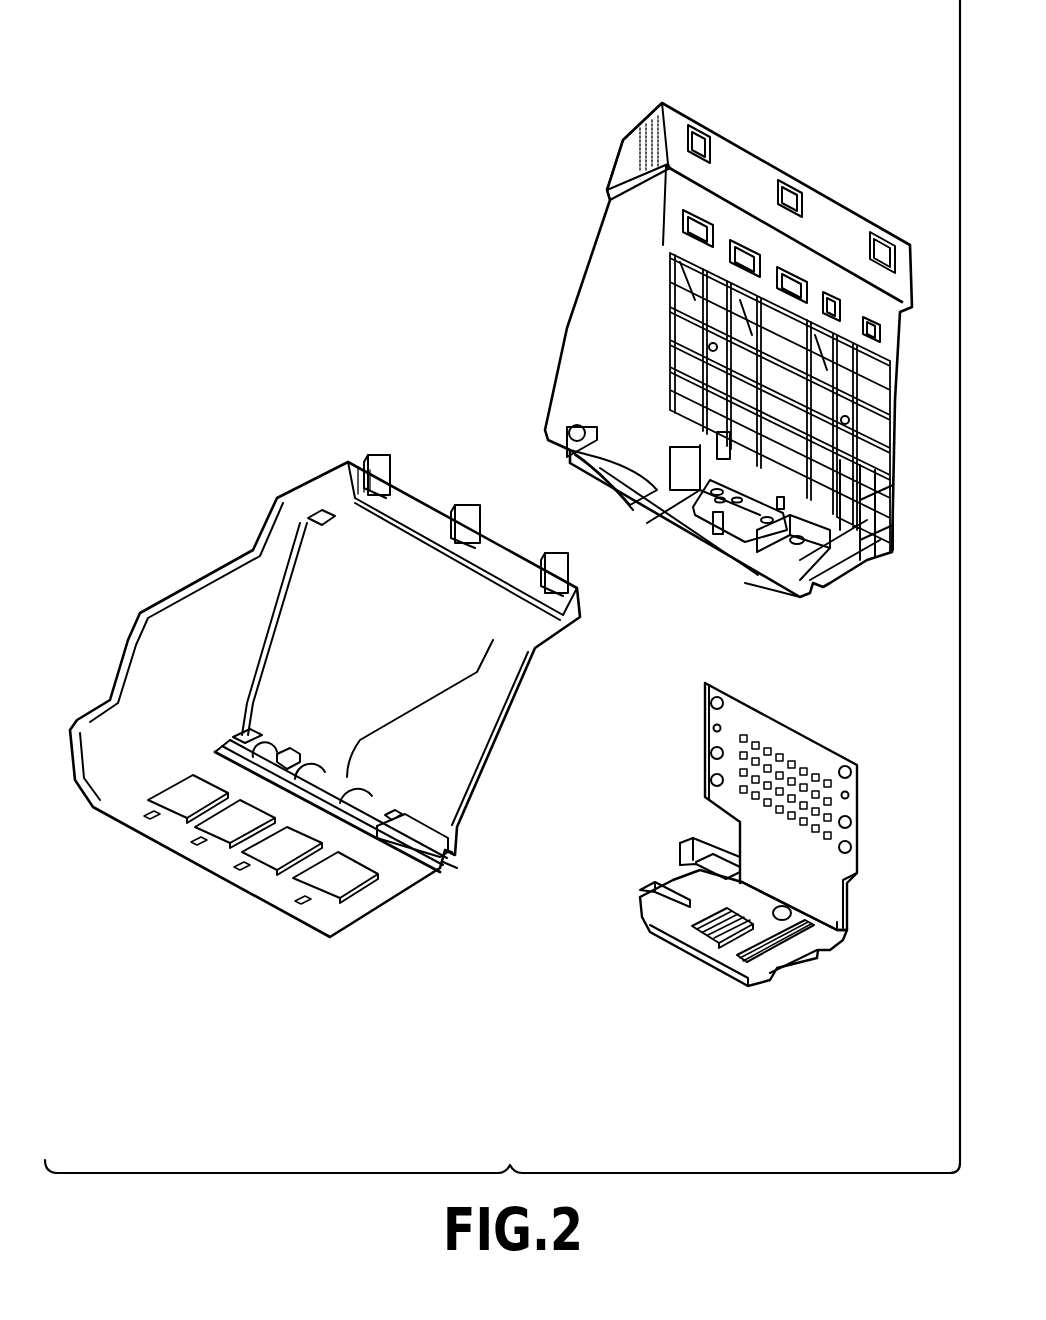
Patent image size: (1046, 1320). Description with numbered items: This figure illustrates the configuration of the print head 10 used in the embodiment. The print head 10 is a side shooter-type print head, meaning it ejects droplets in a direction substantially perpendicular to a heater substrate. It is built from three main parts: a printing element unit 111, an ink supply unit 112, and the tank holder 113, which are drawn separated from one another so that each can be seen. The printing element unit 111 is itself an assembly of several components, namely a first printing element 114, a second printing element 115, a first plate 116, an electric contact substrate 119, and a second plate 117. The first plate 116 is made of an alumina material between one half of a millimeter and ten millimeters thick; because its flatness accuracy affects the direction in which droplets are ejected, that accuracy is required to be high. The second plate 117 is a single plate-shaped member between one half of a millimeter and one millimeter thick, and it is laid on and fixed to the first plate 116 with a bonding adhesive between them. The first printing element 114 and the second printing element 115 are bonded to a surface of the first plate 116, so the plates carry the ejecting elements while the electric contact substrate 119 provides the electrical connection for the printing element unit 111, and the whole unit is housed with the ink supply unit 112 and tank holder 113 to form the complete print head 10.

The print head 10 is at (440, 201).
The ink supply unit 112 is at (708, 122).
The tank holder 113 is at (217, 567).
The printing element unit 111 is at (652, 1032).
The electric contact substrate 119 is at (812, 752).
The first plate 116 is at (682, 850).
The second plate 117 is at (663, 935).
The second printing element 115 is at (710, 937).
The first printing element 114 is at (752, 965).